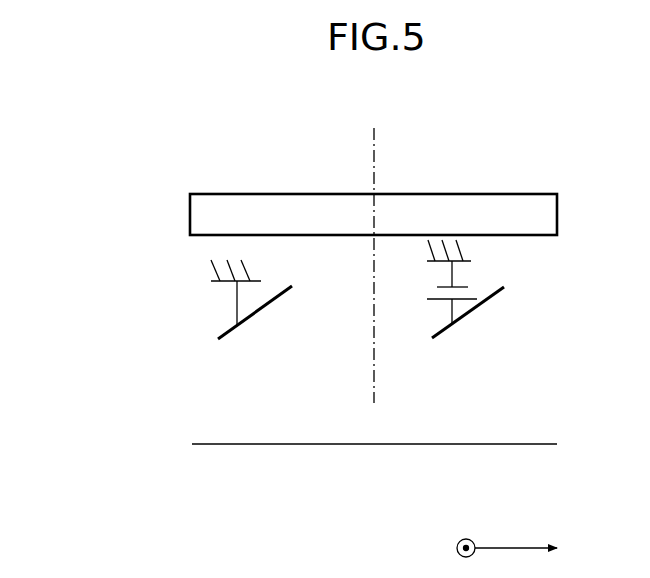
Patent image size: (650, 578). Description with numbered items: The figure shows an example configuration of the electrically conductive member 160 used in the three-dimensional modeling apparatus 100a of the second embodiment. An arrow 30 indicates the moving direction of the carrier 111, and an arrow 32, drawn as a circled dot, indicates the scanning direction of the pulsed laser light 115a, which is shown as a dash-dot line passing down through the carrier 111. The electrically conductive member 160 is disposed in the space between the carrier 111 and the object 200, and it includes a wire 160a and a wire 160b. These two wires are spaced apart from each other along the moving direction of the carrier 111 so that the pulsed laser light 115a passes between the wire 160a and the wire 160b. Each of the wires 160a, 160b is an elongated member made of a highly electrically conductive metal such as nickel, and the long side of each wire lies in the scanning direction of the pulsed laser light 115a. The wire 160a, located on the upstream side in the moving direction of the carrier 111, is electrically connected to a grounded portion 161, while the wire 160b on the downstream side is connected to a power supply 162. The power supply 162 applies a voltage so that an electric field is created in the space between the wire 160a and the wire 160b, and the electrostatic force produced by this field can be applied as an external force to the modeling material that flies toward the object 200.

The three-dimensional modeling apparatus 100a is at (96, 186).
The carrier 111 is at (440, 193).
The pulsed laser light 115a is at (372, 153).
The electrically conductive member 160 is at (162, 338).
The wire 160a is at (219, 342).
The wire 160b is at (495, 297).
The grounded portion 161 is at (210, 274).
The power supply 162 is at (477, 272).
The object 200 is at (440, 444).
The arrow 30 is at (516, 530).
The arrow 32 is at (457, 535).